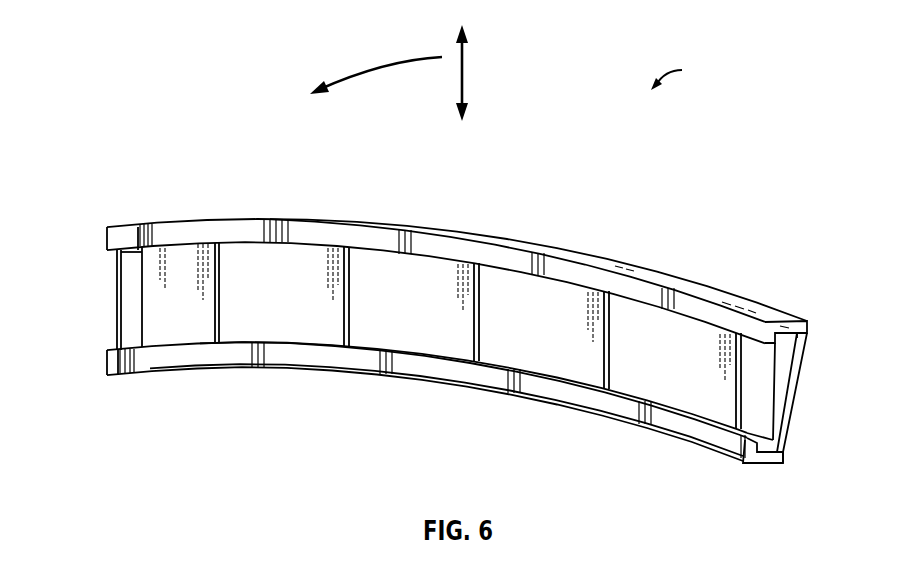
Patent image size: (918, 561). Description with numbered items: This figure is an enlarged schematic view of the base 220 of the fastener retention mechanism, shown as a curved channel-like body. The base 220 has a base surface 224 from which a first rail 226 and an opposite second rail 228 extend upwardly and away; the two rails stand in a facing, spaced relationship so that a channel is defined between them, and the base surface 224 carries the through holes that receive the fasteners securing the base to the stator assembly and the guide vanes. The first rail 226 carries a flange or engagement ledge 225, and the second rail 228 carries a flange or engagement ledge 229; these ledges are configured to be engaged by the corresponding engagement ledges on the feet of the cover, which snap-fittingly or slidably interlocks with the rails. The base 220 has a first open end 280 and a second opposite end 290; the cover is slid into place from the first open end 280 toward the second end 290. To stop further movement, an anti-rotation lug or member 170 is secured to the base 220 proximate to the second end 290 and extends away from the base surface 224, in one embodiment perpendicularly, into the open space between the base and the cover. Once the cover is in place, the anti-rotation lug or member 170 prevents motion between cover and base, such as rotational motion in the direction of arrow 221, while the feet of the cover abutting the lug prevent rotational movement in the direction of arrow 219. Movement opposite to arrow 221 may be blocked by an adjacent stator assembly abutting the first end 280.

The anti-rotation lug or member 170 is at (130, 307).
The arrow 219 is at (465, 80).
The base 220 is at (686, 75).
The arrow 221 is at (388, 63).
The base surface 224 is at (412, 277).
The flange or engagement ledge 225 is at (785, 335).
The first rail 226 is at (593, 277).
The second rail 228 is at (198, 358).
The flange or engagement ledge 229 is at (780, 460).
The first open end 280 is at (795, 417).
The second opposite end 290 is at (117, 322).